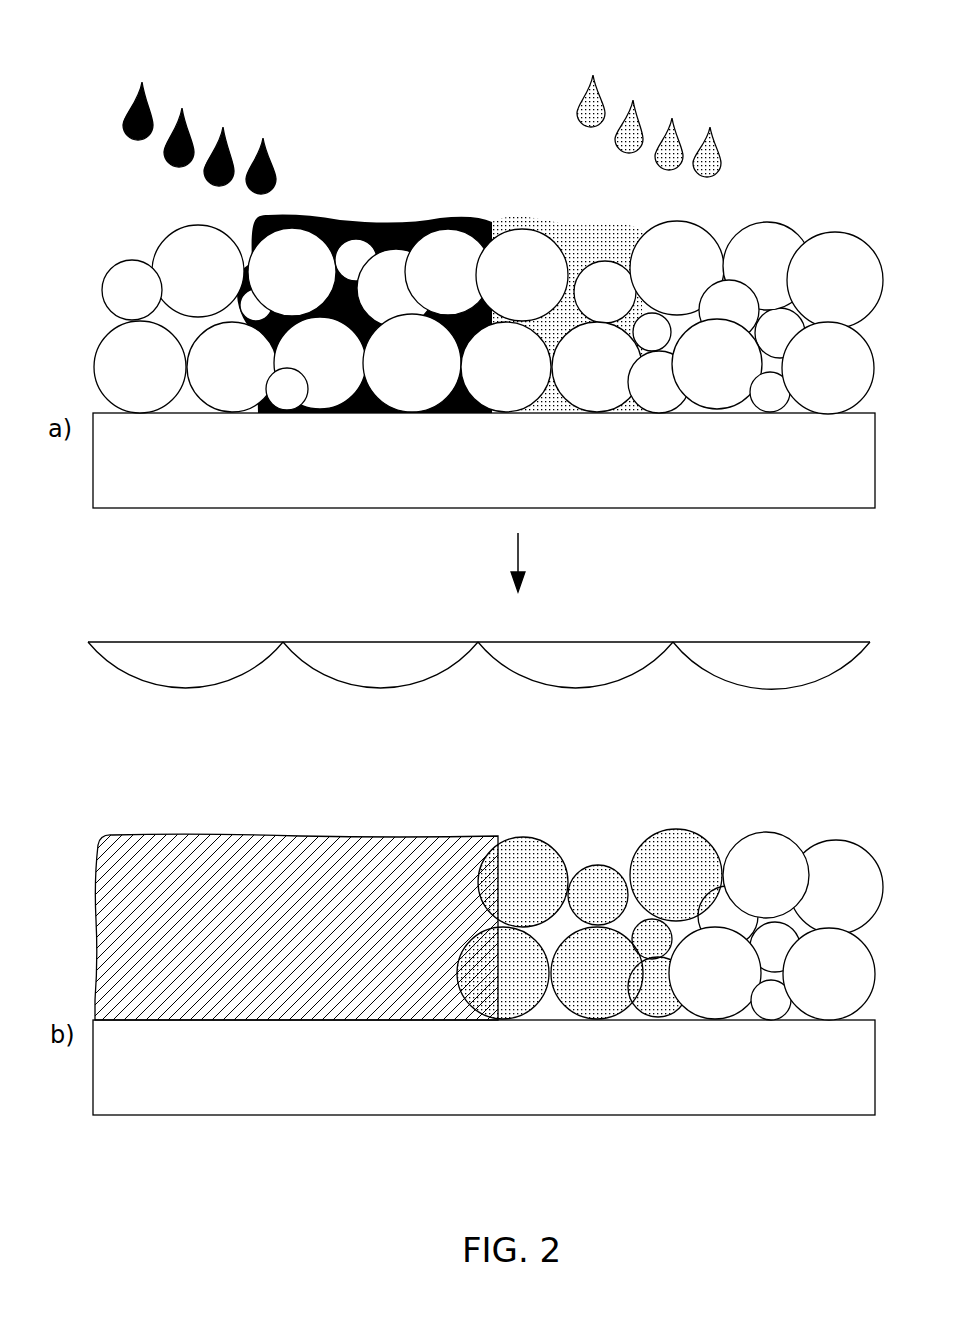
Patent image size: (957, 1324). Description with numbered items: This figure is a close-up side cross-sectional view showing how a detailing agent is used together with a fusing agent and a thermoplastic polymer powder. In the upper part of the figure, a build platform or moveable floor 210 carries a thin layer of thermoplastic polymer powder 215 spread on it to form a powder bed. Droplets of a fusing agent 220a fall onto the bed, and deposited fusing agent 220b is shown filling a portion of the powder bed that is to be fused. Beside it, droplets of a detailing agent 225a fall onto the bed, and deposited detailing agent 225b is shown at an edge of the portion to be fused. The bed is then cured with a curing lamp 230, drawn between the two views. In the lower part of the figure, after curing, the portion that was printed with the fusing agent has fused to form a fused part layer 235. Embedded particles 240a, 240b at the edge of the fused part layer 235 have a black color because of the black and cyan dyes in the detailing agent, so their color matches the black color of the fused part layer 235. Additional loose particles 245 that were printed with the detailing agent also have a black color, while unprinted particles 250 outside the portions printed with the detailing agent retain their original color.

The build platform or moveable floor 210 is at (505, 471).
The thermoplastic polymer powder 215 is at (128, 283).
The droplets of fusing agent 220a is at (133, 95).
The deposited fusing agent 220b is at (398, 220).
The droplets of detailing agent 225a is at (590, 105).
The deposited detailing agent 225b is at (577, 228).
The curing lamp 230 is at (148, 658).
The fused part layer 235 is at (260, 852).
The embedded particle 240a is at (490, 973).
The embedded particle 240b is at (522, 868).
The loose particles 245 is at (663, 870).
The unprinted particles 250 is at (770, 868).